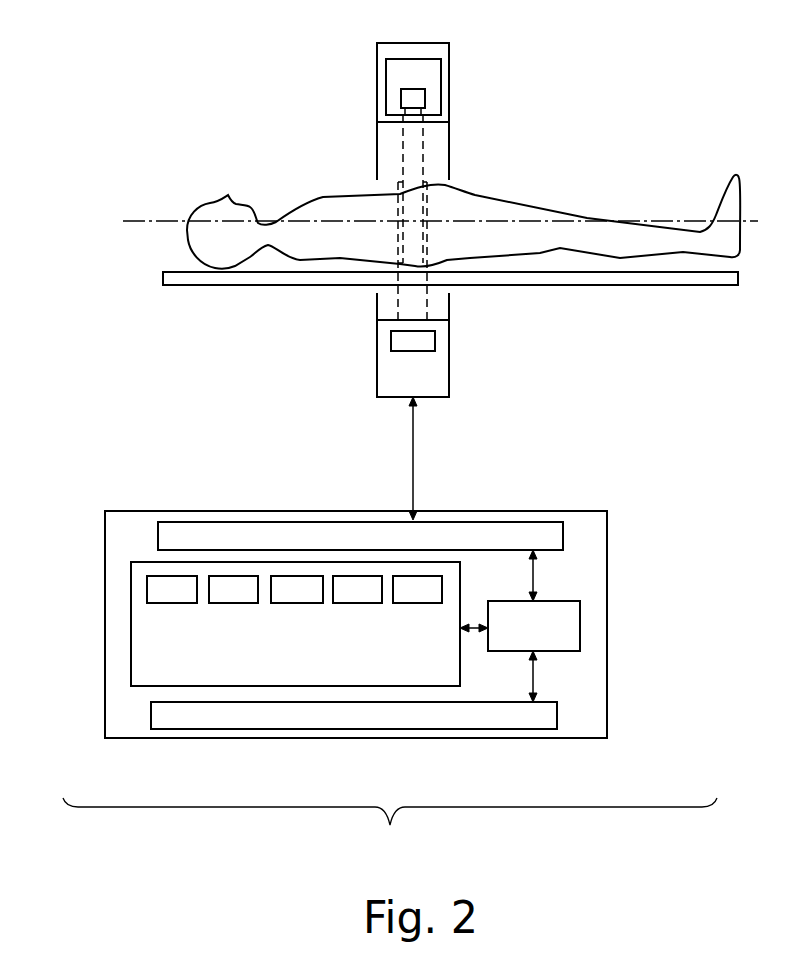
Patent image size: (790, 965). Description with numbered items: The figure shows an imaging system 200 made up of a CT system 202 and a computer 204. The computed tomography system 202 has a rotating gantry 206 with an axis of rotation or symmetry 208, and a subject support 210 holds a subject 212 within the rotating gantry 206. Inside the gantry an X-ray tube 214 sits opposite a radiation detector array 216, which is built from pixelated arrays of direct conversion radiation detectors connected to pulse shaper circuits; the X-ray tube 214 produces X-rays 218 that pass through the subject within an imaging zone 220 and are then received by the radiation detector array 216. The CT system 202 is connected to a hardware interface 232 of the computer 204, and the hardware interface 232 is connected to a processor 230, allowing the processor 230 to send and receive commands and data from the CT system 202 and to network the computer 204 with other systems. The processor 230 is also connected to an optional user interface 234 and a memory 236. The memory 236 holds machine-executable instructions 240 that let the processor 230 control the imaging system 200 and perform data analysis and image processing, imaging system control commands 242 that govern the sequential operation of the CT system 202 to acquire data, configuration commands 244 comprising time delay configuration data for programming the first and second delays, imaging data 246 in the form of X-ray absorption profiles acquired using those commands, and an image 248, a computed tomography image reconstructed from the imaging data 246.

The imaging system 200 is at (390, 828).
The CT system 202 is at (413, 201).
The computer 204 is at (365, 624).
The rotating gantry 206 is at (450, 83).
The axis of rotation or symmetry 208 is at (440, 208).
The subject support 210 is at (537, 287).
The subject 212 is at (530, 204).
The X-ray tube 214 is at (401, 93).
The radiation detector array 216 is at (391, 338).
The X-rays 218 is at (403, 146).
The imaging zone 220 is at (427, 192).
The processor 230 is at (534, 626).
The hardware interface 232 is at (360, 536).
The user interface 234 is at (354, 715).
The memory 236 is at (234, 624).
The machine-executable instructions 240 is at (172, 589).
The imaging system control commands 242 is at (233, 589).
The configuration commands 244 is at (297, 589).
The imaging data 246 is at (357, 589).
The image 248 is at (417, 589).